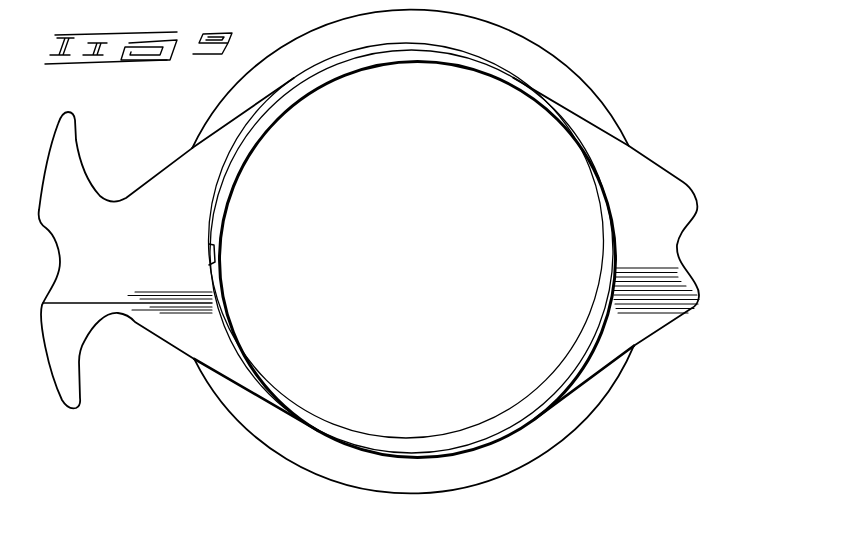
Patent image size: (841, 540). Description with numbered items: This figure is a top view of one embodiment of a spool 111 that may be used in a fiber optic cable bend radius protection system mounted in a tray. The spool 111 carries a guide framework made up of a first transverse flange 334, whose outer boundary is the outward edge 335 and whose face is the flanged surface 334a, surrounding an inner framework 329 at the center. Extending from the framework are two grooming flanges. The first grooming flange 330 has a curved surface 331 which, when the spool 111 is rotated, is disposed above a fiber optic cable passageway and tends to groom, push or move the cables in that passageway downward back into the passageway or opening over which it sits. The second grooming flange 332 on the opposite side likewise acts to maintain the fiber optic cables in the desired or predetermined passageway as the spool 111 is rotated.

The spool 111 is at (616, 83).
The inner framework 329 is at (312, 422).
The first grooming flange 330 is at (153, 282).
The curved surface 331 is at (118, 318).
The second grooming flange 332 is at (634, 188).
The first transverse flange 334 is at (543, 437).
The flanged surface 334a is at (305, 453).
The outward edge 335 is at (466, 489).